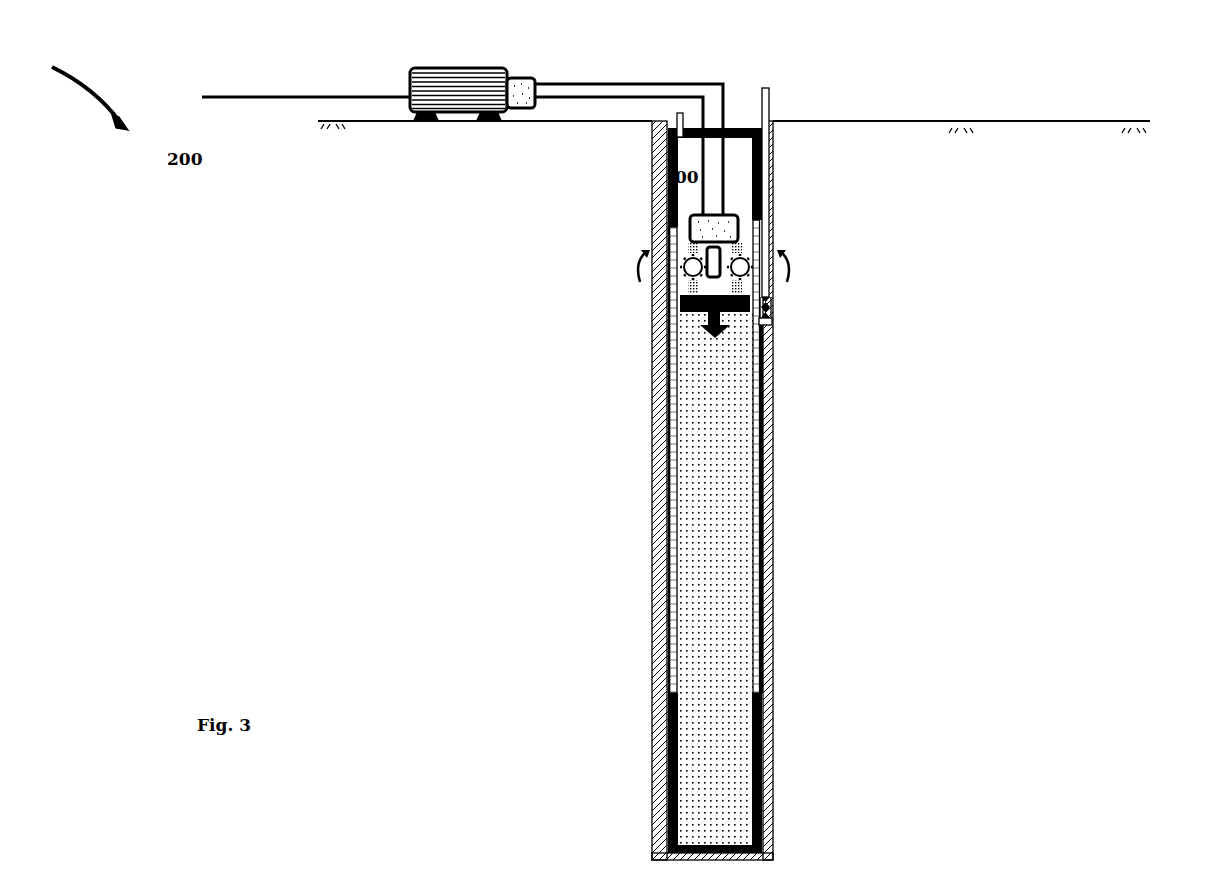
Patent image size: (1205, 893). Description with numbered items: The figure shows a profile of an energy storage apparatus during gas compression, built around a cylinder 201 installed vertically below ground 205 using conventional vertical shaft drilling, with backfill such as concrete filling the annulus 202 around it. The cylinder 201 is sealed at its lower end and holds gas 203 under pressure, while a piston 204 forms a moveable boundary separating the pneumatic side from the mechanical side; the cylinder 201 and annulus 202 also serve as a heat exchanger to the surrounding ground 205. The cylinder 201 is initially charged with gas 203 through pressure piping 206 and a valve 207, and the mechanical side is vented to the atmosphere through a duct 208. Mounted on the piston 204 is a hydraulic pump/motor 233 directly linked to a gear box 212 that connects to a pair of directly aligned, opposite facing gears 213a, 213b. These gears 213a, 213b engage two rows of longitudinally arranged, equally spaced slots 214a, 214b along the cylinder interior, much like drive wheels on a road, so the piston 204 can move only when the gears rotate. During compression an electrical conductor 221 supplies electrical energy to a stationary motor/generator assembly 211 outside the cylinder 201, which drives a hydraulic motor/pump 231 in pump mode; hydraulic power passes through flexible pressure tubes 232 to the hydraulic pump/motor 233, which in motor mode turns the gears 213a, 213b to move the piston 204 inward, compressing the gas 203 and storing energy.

The cylinder 201 is at (667, 702).
The annulus 202 is at (663, 802).
The gas 203 is at (712, 702).
The piston 204 is at (735, 318).
The ground 205 is at (1027, 121).
The pressure piping 206 is at (770, 93).
The valve 207 is at (772, 308).
The duct 208 is at (676, 125).
The motor/generator assembly 211 is at (487, 70).
The gear box 212 is at (707, 255).
The gear 213a is at (688, 280).
The gear 213b is at (748, 258).
The slots 214a is at (670, 490).
The slots 214b is at (760, 498).
The electrical conductor 221 is at (358, 95).
The hydraulic motor/pump 231 is at (518, 80).
The flexible pressure tubes 232 is at (657, 97).
The hydraulic pump/motor 233 is at (735, 215).